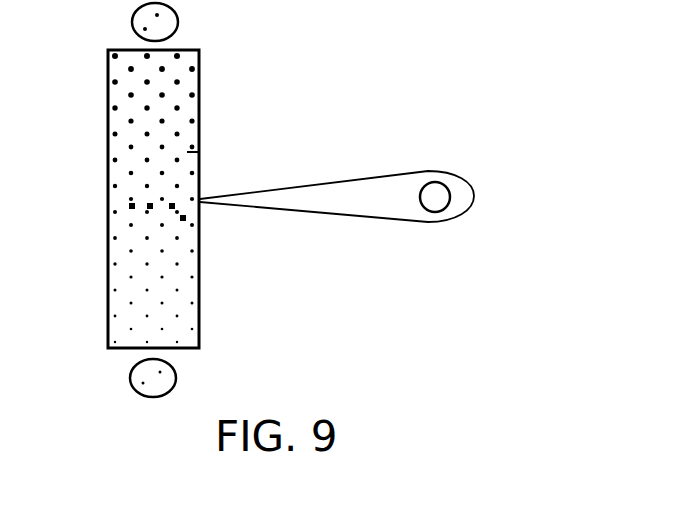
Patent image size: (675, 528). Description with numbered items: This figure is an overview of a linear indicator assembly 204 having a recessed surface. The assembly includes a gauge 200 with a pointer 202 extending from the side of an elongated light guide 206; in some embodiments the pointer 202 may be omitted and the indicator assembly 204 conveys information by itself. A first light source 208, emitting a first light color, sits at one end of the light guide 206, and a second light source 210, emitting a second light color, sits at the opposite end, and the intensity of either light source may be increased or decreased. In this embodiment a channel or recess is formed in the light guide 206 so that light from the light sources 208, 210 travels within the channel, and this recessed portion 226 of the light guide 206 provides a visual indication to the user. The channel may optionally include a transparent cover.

The gauge 200 is at (418, 221).
The pointer 202 is at (310, 210).
The linear indicator assembly 204 is at (562, 116).
The light guide 206 is at (124, 93).
The first light source 208 is at (131, 380).
The second light source 210 is at (133, 22).
The recessed portion 226 is at (178, 297).